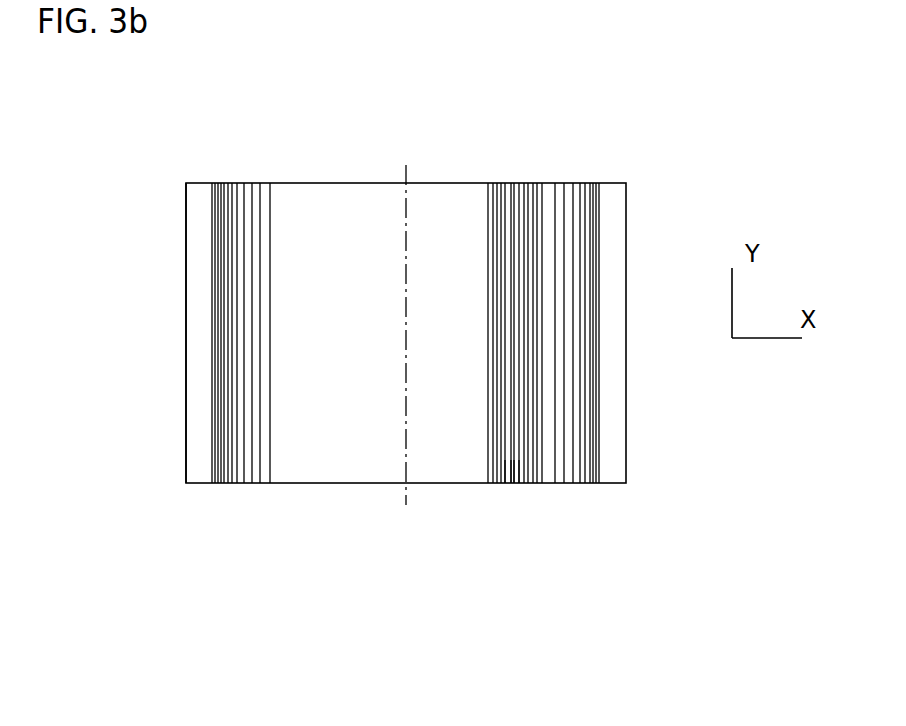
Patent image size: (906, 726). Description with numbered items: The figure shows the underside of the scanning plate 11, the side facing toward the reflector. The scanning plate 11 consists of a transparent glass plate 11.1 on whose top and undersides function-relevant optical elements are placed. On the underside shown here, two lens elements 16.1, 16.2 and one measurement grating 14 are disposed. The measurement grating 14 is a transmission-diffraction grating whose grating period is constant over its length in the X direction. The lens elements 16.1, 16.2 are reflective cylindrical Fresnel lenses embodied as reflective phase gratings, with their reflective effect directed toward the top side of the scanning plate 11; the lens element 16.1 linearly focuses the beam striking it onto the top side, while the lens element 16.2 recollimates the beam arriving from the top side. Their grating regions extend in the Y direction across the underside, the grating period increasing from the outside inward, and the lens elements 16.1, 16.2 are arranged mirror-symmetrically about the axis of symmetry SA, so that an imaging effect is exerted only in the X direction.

The scanning plate 11 is at (180, 340).
The transparent glass plate 11.1 is at (195, 283).
The lens element 16.2 is at (243, 183).
The lens element 16.1 is at (573, 185).
The measurement grating 14 is at (512, 465).
The axis of symmetry SA is at (408, 490).